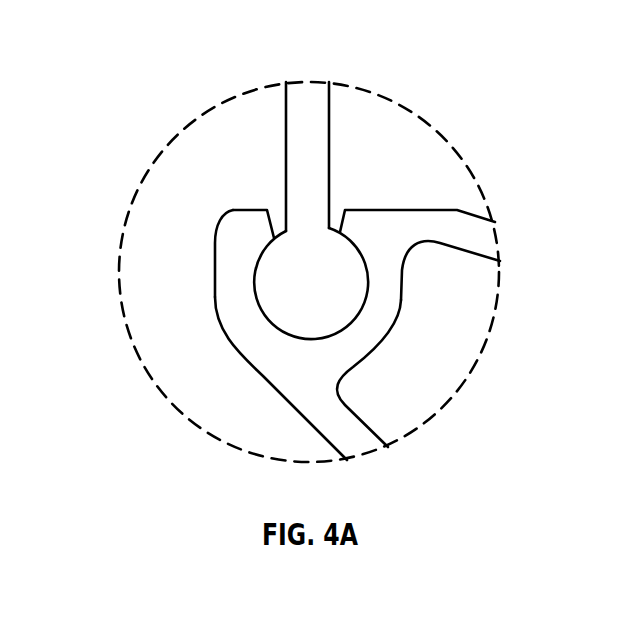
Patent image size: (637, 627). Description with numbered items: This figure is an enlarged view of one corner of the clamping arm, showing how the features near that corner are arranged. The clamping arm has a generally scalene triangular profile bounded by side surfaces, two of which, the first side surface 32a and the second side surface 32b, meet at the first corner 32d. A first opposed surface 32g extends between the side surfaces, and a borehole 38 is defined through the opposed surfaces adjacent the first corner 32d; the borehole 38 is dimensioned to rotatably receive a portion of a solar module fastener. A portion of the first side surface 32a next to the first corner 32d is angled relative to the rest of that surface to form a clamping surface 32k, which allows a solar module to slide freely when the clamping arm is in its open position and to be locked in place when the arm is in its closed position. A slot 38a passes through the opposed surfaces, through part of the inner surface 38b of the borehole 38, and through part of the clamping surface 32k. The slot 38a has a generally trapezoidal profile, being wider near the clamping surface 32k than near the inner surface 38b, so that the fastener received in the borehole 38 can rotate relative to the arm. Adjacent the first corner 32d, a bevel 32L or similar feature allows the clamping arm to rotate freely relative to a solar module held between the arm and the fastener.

The first side surface 32a is at (484, 216).
The second side surface 32b is at (267, 380).
The first corner 32d is at (149, 228).
The first opposed surface 32g is at (360, 333).
The clamping surface 32k is at (253, 208).
The bevel 32L is at (227, 218).
The borehole 38 is at (281, 297).
The slot 38a is at (308, 210).
The inner surface 38b is at (362, 288).